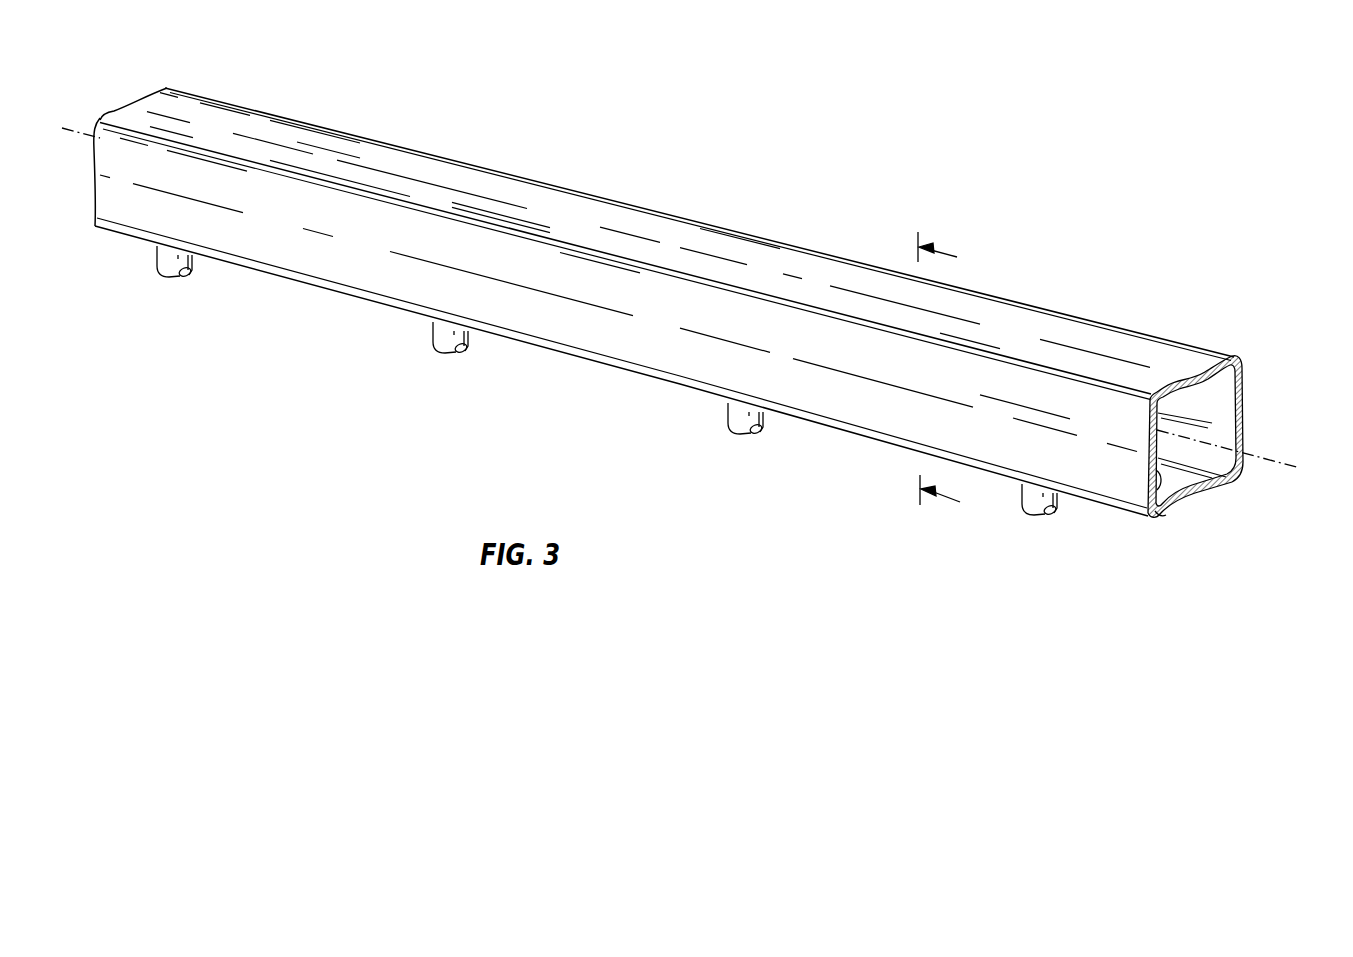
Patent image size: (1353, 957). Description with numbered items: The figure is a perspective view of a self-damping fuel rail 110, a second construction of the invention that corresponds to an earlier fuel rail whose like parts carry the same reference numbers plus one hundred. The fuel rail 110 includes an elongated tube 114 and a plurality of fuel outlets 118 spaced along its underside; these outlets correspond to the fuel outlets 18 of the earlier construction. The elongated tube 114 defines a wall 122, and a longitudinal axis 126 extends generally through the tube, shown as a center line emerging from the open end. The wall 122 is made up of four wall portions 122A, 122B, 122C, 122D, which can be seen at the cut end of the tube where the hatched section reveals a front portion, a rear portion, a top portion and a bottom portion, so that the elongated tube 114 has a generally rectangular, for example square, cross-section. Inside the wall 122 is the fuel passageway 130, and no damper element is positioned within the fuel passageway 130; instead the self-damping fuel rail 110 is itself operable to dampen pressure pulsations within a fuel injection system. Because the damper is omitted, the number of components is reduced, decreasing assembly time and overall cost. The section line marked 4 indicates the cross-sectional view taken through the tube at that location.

The self-damping fuel rail 110 is at (699, 291).
The elongated tube 114 is at (471, 158).
The fuel outlets 118 is at (157, 265).
The fuel outlets 18 is at (1023, 497).
The wall 122 is at (1186, 413).
The wall portion 122A is at (1156, 497).
The wall portion 122B is at (1244, 401).
The wall portion 122C is at (1200, 379).
The wall portion 122D is at (1207, 493).
The longitudinal axis 126 is at (1280, 456).
The fuel passageway 130 is at (1163, 519).
The section line 4- 4 is at (945, 374).